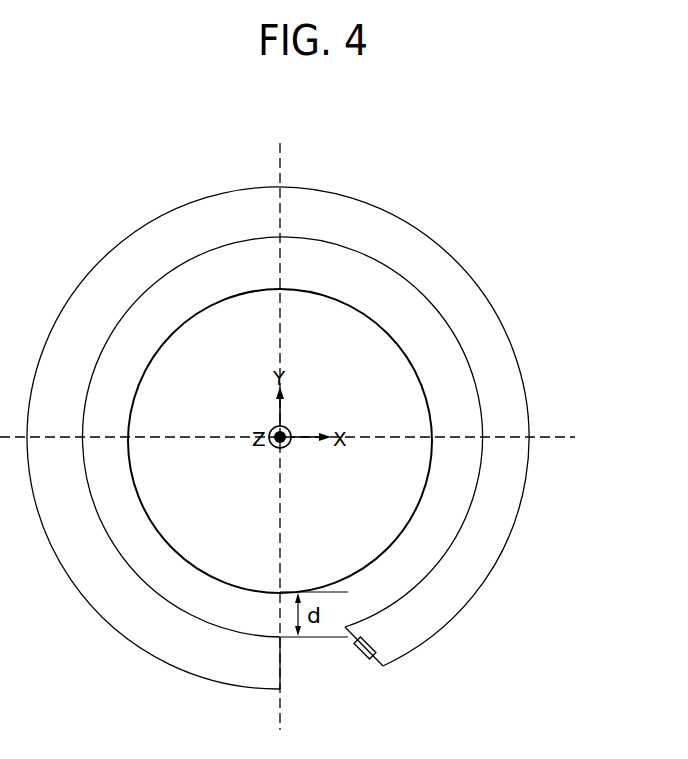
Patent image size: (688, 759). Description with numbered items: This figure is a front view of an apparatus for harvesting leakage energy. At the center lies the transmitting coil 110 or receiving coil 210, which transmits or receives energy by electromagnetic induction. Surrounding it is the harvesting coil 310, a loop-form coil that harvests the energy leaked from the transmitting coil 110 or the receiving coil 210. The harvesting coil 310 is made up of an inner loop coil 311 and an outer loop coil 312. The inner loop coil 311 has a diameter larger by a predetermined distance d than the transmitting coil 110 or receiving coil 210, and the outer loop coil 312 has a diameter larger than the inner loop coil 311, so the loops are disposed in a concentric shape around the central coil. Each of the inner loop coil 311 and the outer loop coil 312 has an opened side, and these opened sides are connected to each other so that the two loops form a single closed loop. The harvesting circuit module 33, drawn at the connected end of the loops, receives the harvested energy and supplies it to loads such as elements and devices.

The transmitting coil 110 is at (339, 391).
The receiving coil 210 is at (367, 317).
The harvesting coil 310 is at (343, 438).
The inner loop coil 311 is at (475, 498).
The outer loop coil 312 is at (523, 513).
The harvesting circuit module 33 is at (357, 655).